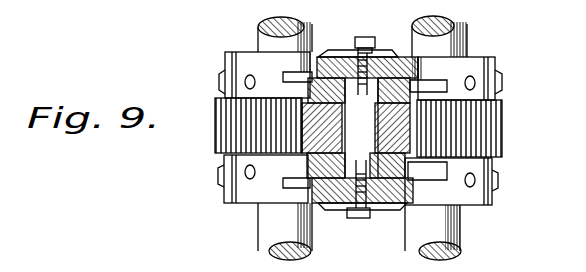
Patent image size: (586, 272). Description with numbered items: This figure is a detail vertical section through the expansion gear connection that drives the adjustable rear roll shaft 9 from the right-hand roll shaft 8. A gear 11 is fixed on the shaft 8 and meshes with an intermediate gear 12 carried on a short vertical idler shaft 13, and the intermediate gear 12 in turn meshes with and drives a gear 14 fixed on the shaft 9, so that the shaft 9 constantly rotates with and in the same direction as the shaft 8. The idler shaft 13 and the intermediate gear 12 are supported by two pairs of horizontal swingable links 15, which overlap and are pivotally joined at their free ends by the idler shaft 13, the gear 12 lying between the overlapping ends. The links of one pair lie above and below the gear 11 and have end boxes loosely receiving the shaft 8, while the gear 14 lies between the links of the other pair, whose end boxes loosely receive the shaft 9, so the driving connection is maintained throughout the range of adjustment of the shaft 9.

The roll shaft 8 is at (455, 234).
The roll shaft 9 is at (302, 233).
The gear 11 is at (498, 142).
The intermediate gear 12 is at (333, 128).
The idler shaft 13 is at (343, 50).
The gear 14 is at (220, 122).
The swingable links 15 is at (392, 57).